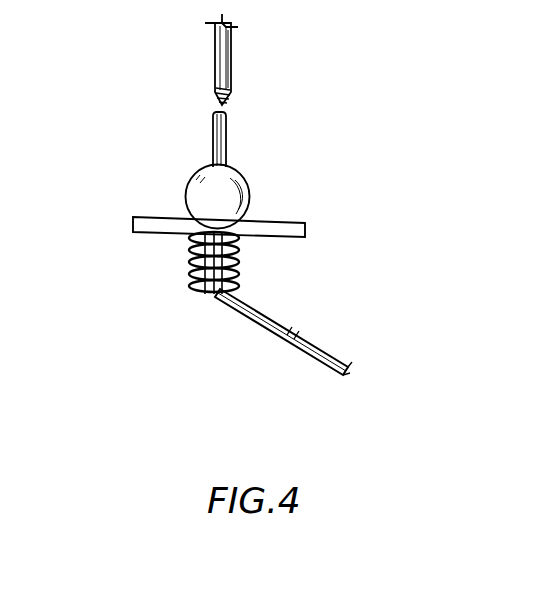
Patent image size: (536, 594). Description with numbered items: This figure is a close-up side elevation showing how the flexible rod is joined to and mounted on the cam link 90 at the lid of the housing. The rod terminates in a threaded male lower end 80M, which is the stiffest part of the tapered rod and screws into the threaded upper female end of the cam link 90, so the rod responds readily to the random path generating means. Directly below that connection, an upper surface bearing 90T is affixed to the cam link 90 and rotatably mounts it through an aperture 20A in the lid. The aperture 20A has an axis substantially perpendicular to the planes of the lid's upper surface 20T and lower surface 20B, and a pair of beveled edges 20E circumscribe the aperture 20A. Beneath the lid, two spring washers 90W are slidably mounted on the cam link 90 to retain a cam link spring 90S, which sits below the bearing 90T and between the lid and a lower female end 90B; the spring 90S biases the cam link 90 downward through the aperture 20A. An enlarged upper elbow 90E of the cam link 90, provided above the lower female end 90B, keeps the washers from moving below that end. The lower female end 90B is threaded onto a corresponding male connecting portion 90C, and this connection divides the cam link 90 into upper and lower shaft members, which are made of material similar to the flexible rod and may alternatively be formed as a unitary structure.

The threaded male lower end 80M is at (232, 95).
The cam link 90 is at (226, 148).
The aperture 20A is at (250, 218).
The upper surface bearing 90T is at (218, 197).
The lower surface 20B is at (138, 233).
The upper surface 20T is at (138, 216).
The beveled edges 20E is at (188, 238).
The cam link spring 90S is at (185, 255).
The spring washers 90W is at (240, 240).
The male connecting portion 90C is at (336, 360).
The enlarged upper elbow 90E is at (213, 302).
The lower female end 90B is at (272, 337).